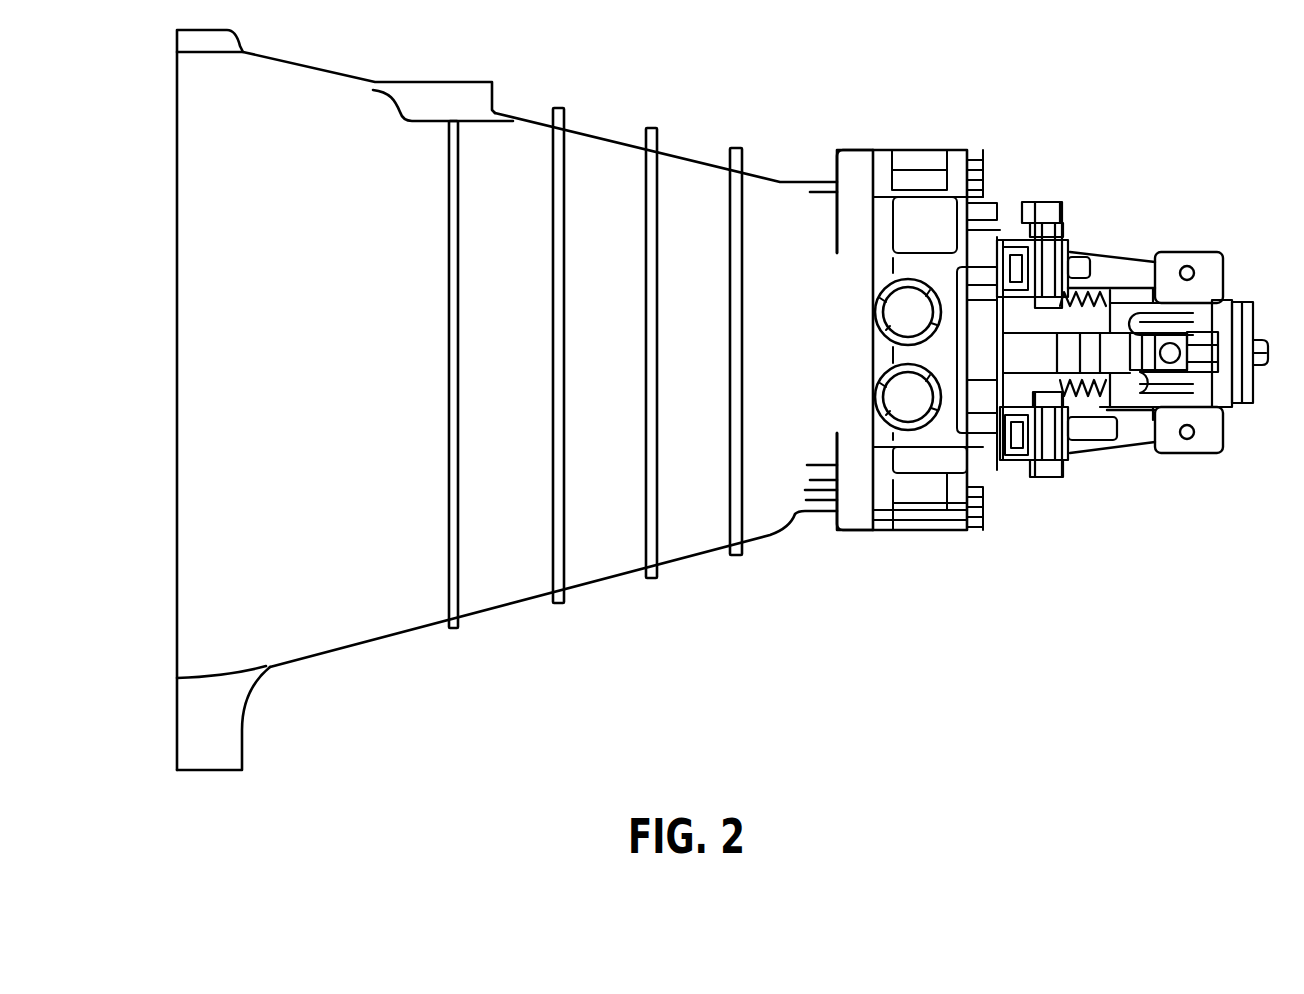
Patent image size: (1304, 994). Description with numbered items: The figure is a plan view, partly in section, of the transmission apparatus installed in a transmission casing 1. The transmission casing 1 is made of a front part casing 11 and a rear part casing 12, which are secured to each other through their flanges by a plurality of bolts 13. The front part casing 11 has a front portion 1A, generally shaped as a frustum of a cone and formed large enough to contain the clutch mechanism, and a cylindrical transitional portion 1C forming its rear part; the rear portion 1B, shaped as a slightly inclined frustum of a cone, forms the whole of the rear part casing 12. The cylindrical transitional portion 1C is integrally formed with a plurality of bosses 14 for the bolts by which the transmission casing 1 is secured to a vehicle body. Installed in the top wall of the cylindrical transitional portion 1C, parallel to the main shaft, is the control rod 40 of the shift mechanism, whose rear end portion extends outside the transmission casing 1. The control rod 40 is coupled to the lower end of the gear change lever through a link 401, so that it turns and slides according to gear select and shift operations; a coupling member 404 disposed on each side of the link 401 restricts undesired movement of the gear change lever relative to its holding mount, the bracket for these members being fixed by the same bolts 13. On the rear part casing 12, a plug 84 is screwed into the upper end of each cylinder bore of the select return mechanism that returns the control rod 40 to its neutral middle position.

The transmission casing 1 is at (693, 152).
The front portion 1A is at (605, 131).
The rear portion 1B is at (1120, 253).
The cylindrical transitional portion 1C is at (928, 151).
The front part casing 11 is at (598, 583).
The rear part casing 12 is at (1140, 444).
The bolts 13 is at (985, 150).
The bosses 14 is at (903, 150).
The control rod 40 is at (1110, 441).
The plug 84 is at (874, 388).
The link 401 is at (1257, 373).
The coupling member 404 is at (1073, 253).